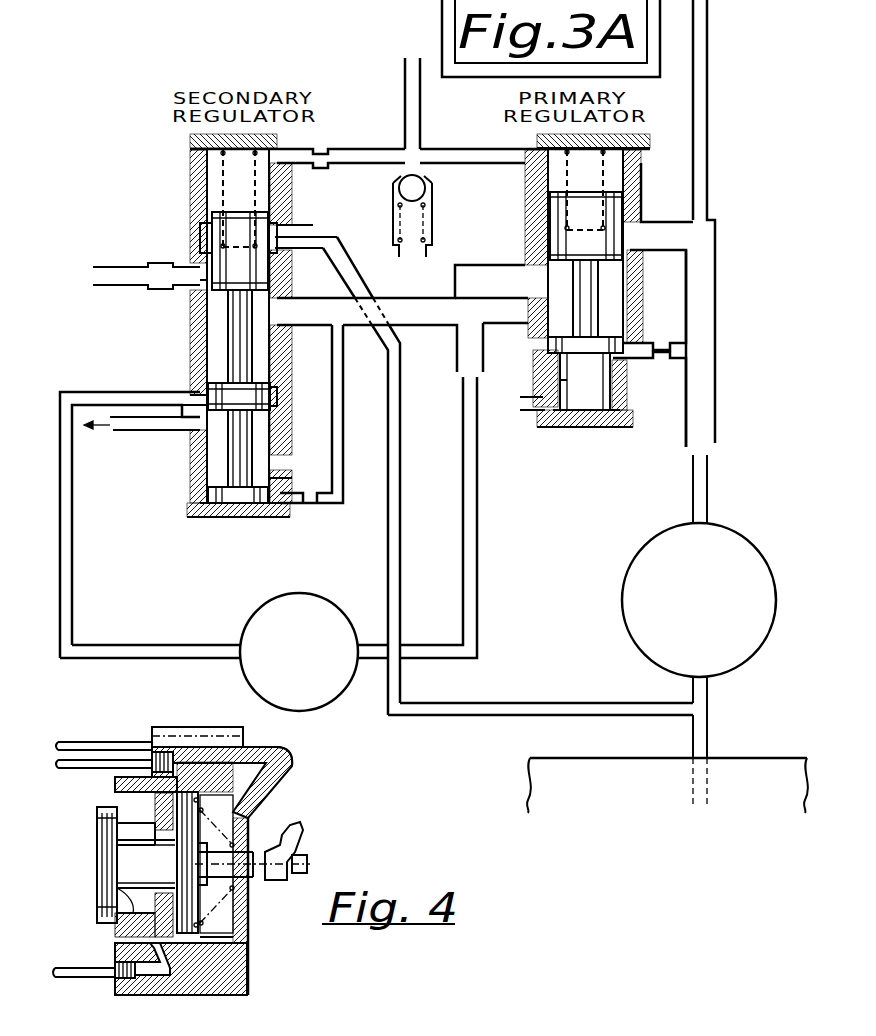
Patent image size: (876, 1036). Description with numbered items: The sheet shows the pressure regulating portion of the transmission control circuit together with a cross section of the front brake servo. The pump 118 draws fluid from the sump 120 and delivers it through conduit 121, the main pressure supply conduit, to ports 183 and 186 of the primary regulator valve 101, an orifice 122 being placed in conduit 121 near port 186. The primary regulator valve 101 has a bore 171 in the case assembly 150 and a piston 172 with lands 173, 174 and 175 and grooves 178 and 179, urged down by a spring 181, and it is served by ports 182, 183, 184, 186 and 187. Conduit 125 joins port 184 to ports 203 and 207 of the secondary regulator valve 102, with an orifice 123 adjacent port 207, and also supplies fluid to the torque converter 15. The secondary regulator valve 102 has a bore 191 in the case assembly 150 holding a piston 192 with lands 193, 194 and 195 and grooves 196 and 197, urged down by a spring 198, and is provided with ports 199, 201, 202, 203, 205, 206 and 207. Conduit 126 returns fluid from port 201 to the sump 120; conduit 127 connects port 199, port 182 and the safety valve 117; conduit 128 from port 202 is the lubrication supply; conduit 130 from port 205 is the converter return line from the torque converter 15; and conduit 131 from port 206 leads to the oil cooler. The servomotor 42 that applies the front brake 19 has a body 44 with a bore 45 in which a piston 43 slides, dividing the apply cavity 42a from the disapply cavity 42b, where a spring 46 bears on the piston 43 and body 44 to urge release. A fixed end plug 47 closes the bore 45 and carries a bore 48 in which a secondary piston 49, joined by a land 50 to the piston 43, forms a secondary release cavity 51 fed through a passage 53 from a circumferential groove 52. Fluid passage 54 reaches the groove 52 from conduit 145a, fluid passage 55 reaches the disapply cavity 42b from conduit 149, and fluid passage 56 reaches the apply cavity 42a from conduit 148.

In FIG. 3A, the fluid torque converter 15 is at (313, 623).
In FIG. 4, the front brake 19 is at (310, 840).
In FIG. 4, the servomotor 42 is at (302, 748).
In FIG. 4, the apply cavity 42a is at (176, 835).
In FIG. 4, the disapply cavity 42b is at (225, 801).
In FIG. 4, the piston 43 is at (233, 910).
In FIG. 4, the body 44 is at (240, 980).
In FIG. 4, the bore 45 is at (235, 935).
In FIG. 4, the spring 46 is at (235, 893).
In FIG. 4, the end plug 47 is at (100, 920).
In FIG. 4, the bore 48 is at (133, 925).
In FIG. 4, the secondary piston 49 is at (103, 844).
In FIG. 4, the land 50 is at (125, 883).
In FIG. 4, the secondary release cavity 51 is at (125, 830).
In FIG. 4, the circumferential groove 52 is at (137, 778).
In FIG. 4, the passage 53 is at (135, 810).
In FIG. 4, the fluid passage 54 is at (212, 985).
In FIG. 4, the fluid passage 55 is at (280, 773).
In FIG. 4, the fluid passage 56 is at (197, 727).
In FIG. 3A, the primary regulator valve 101 is at (652, 166).
In FIG. 3A, the secondary regulator valve 102 is at (184, 168).
In FIG. 3A, the safety valve 117 is at (447, 207).
In FIG. 3A, the pump 118 is at (718, 641).
In FIG. 3A, the sump 120 is at (612, 815).
In FIG. 3A, the conduit 121 is at (717, 423).
In FIG. 3A, the orifice 122 is at (655, 348).
In FIG. 3A, the orifice 123 is at (310, 508).
In FIG. 3A, the conduit 125 is at (435, 318).
In FIG. 3A, the conduit 126 is at (393, 456).
In FIG. 3A, the conduit 127 is at (405, 64).
In FIG. 3A, the conduit 128 is at (110, 268).
In FIG. 3A, the conduit 130 is at (62, 583).
In FIG. 3A, the conduit 131 is at (125, 410).
In FIG. 4, the conduit 145a is at (63, 972).
In FIG. 4, the conduit 148 is at (70, 741).
In FIG. 4, the conduit 149 is at (72, 768).
In FIG. 3A, the case assembly 150 is at (625, 425).
In FIG. 3A, the bore 171 is at (622, 180).
In FIG. 3A, the piston 172 is at (570, 422).
In FIG. 3A, the land 173 is at (548, 240).
In FIG. 3A, the land 174 is at (548, 352).
In FIG. 3A, the land 175 is at (560, 380).
In FIG. 3A, the groove 178 is at (550, 321).
In FIG. 3A, the groove 179 is at (585, 381).
In FIG. 3A, the spring 181 is at (589, 190).
In FIG. 3A, the port 182 is at (540, 153).
In FIG. 3A, the port 183 is at (625, 250).
In FIG. 3A, the port 184 is at (540, 278).
In FIG. 3A, the port 186 is at (620, 368).
In FIG. 3A, the port 187 is at (543, 420).
In FIG. 3A, the bore 191 is at (208, 200).
In FIG. 3A, the piston 192 is at (235, 510).
In FIG. 3A, the land 193 is at (214, 232).
In FIG. 3A, the land 194 is at (262, 390).
In FIG. 3A, the land 195 is at (278, 480).
In FIG. 3A, the groove 196 is at (225, 340).
In FIG. 3A, the groove 197 is at (235, 460).
In FIG. 3A, the spring 198 is at (252, 172).
In FIG. 3A, the port 199 is at (280, 157).
In FIG. 3A, the port 201 is at (285, 252).
In FIG. 3A, the port 202 is at (200, 283).
In FIG. 3A, the port 203 is at (270, 322).
In FIG. 3A, the port 205 is at (192, 368).
In FIG. 3A, the port 206 is at (192, 400).
In FIG. 3A, the port 207 is at (278, 512).